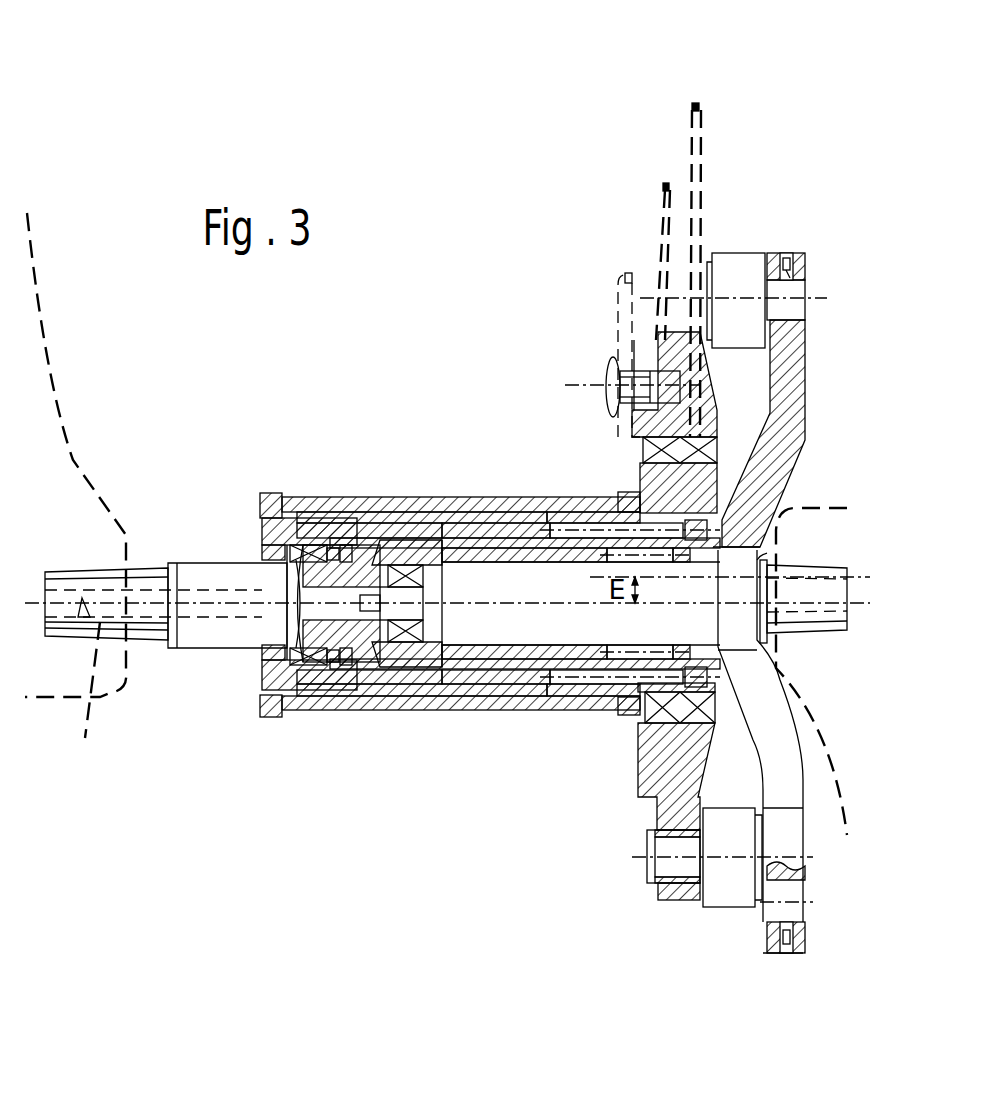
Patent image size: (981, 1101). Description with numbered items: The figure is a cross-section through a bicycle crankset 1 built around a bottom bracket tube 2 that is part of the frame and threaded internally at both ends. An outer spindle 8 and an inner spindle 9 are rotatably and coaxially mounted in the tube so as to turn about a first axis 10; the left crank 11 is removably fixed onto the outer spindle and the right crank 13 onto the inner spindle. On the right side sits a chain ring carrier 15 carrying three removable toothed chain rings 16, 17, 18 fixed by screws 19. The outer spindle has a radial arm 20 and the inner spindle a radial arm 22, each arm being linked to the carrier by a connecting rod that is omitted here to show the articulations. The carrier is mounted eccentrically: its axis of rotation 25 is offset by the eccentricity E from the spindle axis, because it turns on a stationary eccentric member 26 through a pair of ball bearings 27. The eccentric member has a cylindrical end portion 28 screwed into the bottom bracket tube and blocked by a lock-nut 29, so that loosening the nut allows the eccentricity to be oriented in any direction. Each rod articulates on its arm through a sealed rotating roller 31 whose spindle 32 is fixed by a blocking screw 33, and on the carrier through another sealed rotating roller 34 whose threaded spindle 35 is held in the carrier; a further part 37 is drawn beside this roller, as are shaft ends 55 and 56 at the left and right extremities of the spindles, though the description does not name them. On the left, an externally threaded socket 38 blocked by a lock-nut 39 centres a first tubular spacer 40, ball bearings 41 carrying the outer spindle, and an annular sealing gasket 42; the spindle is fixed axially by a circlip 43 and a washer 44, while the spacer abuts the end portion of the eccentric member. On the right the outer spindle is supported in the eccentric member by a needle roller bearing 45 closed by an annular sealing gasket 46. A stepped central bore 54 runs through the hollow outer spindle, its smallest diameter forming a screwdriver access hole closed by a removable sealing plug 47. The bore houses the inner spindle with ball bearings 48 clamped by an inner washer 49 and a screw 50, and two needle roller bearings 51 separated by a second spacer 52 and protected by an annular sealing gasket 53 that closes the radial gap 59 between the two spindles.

The crankset 1 is at (456, 382).
The bottom bracket tube 2 is at (440, 497).
The outer spindle 8 is at (360, 512).
The inner spindle 9 is at (518, 538).
The first axis 10 is at (210, 590).
The left crank 11 is at (55, 400).
The right crank 13 is at (838, 782).
The chain ring carrier 15 is at (672, 350).
The chain ring 16 is at (622, 285).
The chain ring 17 is at (664, 185).
The chain ring 18 is at (697, 105).
The screw 19 is at (605, 385).
The radial arm 20 is at (806, 368).
The radial arm 22 is at (797, 853).
The axis of rotation 25 is at (590, 578).
The eccentric member 26 is at (718, 483).
The ball bearings 27 is at (705, 730).
The cylindrical end portion 28 is at (560, 523).
The lock-nut 29 is at (625, 492).
The sealed rotating roller 31 is at (738, 253).
The spindle 32 is at (805, 296).
The blocking screw 33 is at (786, 255).
The sealed rotating roller 34 is at (728, 890).
The spindle 35 is at (648, 857).
The washer 37 is at (650, 886).
The externally threaded socket 38 is at (302, 517).
The lock-nut 39 is at (270, 493).
The first tubular spacer 40 is at (405, 523).
The ball bearings 41 is at (345, 665).
The annular sealing gasket 42 is at (295, 665).
The circlip 43 is at (330, 662).
The washer 44 is at (350, 662).
The needle roller bearing 45 is at (545, 696).
The annular sealing gasket 46 is at (729, 690).
The removable sealing plug 47 is at (93, 740).
The ball bearings 48 is at (437, 667).
The inner washer 49 is at (410, 667).
The screw 50 is at (380, 667).
The needle roller bearings 51 is at (493, 696).
The second spacer 52 is at (495, 523).
The annular sealing gasket 53 is at (692, 645).
The central bore 54 is at (263, 652).
The shaft end 55 is at (75, 578).
The shaft end 56 is at (815, 633).
The radial gap 59 is at (533, 645).